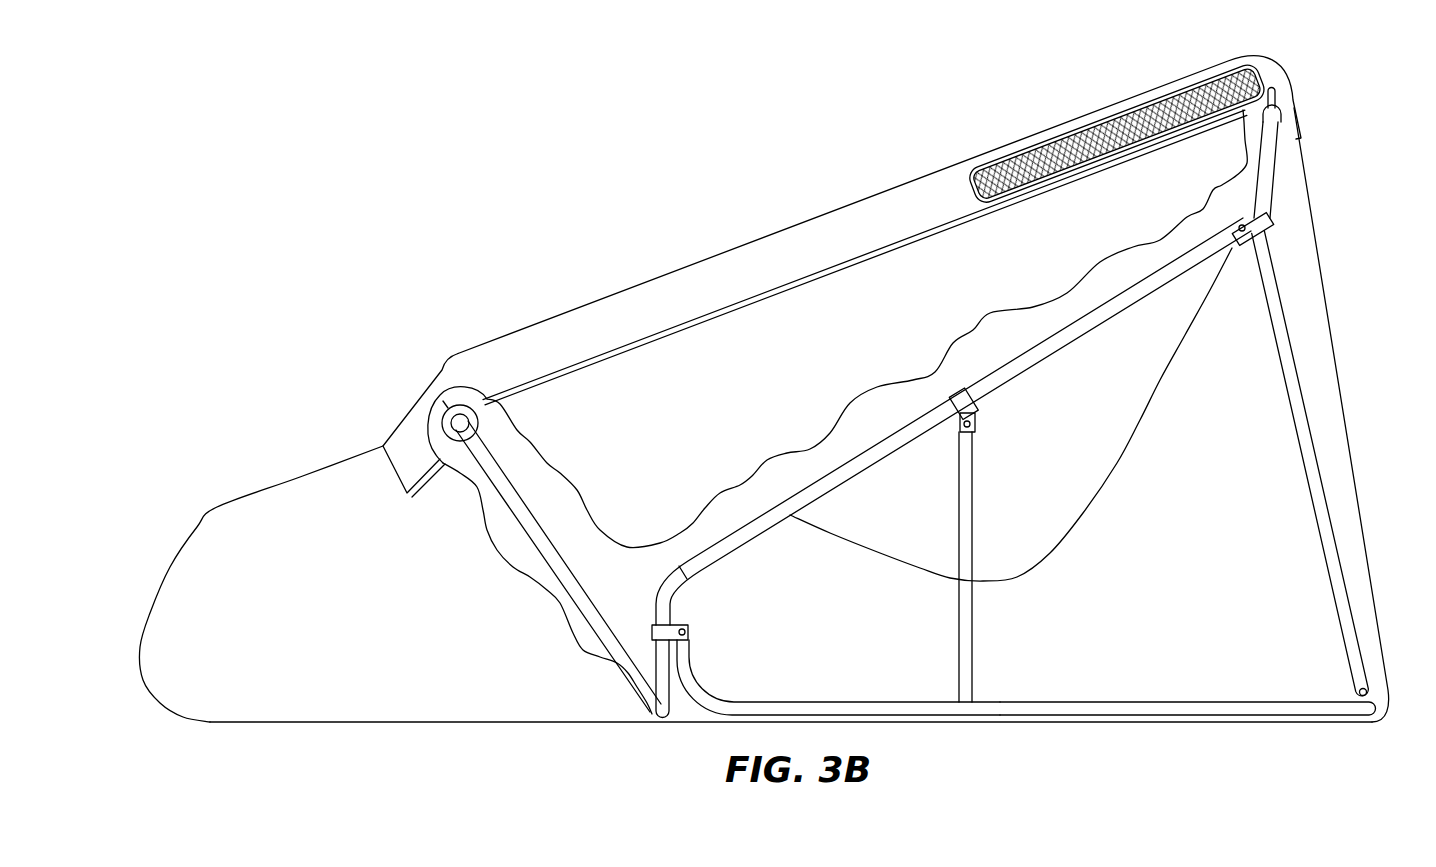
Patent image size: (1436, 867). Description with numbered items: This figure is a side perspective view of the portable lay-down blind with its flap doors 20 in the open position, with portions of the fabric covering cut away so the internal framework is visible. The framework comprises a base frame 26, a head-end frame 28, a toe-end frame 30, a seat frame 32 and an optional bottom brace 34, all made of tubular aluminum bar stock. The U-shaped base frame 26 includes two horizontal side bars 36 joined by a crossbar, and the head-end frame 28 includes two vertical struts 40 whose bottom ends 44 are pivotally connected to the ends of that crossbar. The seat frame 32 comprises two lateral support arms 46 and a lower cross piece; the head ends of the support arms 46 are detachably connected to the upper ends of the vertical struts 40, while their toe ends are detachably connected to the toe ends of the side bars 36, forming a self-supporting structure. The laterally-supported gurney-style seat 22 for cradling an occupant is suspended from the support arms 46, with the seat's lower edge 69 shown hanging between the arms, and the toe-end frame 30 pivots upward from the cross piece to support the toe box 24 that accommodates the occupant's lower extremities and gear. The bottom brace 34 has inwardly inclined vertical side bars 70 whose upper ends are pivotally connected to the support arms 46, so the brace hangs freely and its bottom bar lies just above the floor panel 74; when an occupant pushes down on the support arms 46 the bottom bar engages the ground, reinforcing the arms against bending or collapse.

The flap doors 20 is at (817, 216).
The gurney-style seat 22 is at (1127, 452).
The toe box 24 is at (267, 502).
The base frame 26 is at (1133, 726).
The head-end frame 28 is at (1286, 152).
The toe-end frame 30 is at (494, 456).
The seat frame 32 is at (1164, 298).
The bottom brace 34 is at (982, 662).
The horizontal side bars 36 is at (1250, 712).
The vertical struts 40 is at (1297, 381).
The bottom ends of the struts 44 is at (1367, 676).
The lateral support arms 46 is at (1222, 264).
The fabric lower edge 69 is at (985, 583).
The inwardly inclined vertical side bars 70 is at (960, 622).
The floor panel 74 is at (1040, 722).